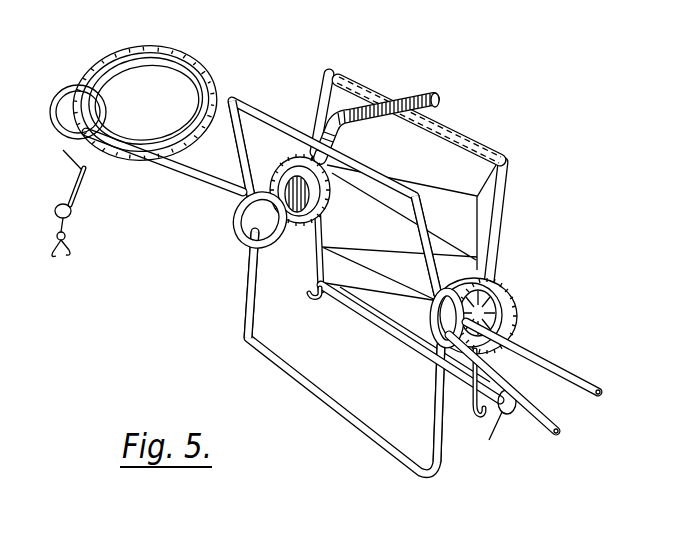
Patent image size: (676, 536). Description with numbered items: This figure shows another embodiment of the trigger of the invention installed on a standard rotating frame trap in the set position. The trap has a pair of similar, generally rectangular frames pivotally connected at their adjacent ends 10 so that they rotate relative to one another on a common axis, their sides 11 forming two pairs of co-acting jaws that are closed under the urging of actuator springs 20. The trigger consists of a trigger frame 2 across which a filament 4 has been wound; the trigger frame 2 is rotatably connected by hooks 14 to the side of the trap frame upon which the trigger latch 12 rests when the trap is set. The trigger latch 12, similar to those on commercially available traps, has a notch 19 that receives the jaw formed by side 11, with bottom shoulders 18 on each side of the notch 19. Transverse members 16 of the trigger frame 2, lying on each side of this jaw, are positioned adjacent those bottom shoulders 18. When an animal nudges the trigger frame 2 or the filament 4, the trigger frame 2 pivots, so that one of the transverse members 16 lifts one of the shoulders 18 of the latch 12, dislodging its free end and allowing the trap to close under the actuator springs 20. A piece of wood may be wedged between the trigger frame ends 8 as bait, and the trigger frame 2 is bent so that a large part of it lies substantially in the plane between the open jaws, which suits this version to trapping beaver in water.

The trigger frame 2 is at (482, 212).
The filament 4 is at (450, 244).
The trigger frame ends 8 is at (308, 296).
The adjacent ends 10 is at (232, 160).
The sides 11 is at (245, 97).
The trigger latch 12 is at (434, 100).
The hooks 14 is at (342, 73).
The transverse members 16 is at (466, 132).
The bottom shoulders 18 is at (438, 112).
The notch 19 is at (445, 107).
The actuator springs 20 is at (107, 50).